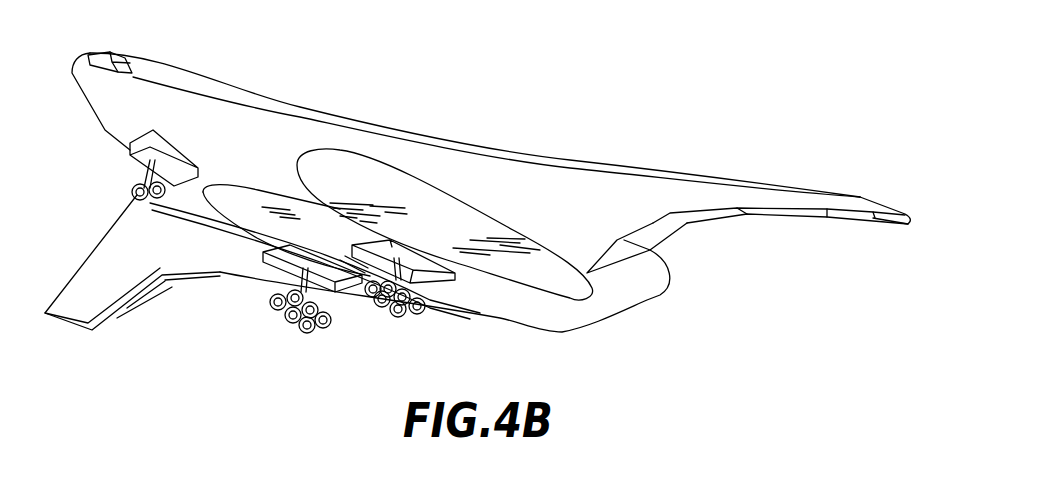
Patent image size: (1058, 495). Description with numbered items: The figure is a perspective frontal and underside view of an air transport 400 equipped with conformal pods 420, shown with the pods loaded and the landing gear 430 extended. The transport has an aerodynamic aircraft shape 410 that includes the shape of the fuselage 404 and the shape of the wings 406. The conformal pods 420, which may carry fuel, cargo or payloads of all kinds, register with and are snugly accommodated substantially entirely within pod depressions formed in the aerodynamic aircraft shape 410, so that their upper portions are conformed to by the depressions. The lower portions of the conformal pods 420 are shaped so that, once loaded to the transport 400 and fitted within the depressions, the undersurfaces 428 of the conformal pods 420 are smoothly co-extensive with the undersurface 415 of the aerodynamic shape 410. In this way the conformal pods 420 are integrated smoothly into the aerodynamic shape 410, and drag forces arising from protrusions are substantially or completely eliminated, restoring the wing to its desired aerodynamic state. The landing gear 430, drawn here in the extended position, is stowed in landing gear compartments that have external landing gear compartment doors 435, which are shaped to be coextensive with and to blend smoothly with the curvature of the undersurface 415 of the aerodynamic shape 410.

The air transport 400 is at (652, 117).
The fuselage 404 is at (120, 57).
The wings 406 is at (96, 250).
The aerodynamic aircraft shape 410 is at (470, 145).
The undersurface of the aerodynamic shape 415 is at (577, 200).
The conformal pods 420 is at (508, 273).
The undersurfaces of the conformal pods 428 is at (537, 274).
The landing gear 430 is at (131, 190).
The landing gear compartment doors 435 is at (188, 163).